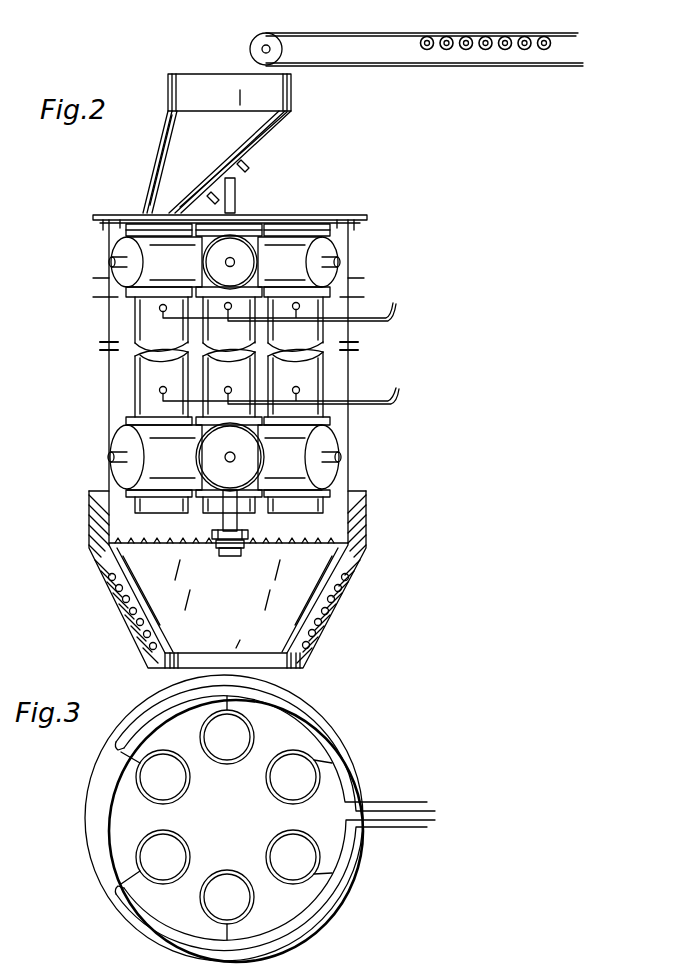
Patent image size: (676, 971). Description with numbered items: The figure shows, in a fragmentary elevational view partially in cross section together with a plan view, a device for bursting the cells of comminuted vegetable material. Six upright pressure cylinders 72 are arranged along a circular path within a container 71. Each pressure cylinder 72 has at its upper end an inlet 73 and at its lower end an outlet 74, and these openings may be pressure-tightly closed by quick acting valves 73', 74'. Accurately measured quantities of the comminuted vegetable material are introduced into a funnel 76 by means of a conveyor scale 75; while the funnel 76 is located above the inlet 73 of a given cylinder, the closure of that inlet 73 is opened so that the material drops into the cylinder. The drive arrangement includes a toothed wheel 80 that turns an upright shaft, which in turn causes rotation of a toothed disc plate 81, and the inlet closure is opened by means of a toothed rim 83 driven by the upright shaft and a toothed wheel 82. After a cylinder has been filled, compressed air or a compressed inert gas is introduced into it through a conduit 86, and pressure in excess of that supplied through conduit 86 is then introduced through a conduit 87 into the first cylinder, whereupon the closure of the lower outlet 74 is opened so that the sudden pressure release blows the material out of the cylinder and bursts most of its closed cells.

In FIG. 2, the container 71 is at (348, 369).
In FIG. 2, the pressure cylinder 72 is at (143, 378).
In FIG. 3, the pressure cylinder 72 is at (298, 762).
In FIG. 2, the inlet 73 is at (230, 199).
In FIG. 2, the quick acting valve 73' is at (249, 260).
In FIG. 2, the outlet 74 is at (229, 518).
In FIG. 2, the quick acting valve 74' is at (249, 457).
In FIG. 2, the conveyor scale 75 is at (396, 33).
In FIG. 2, the funnel 76 is at (284, 96).
In FIG. 2, the toothed wheel 80 is at (334, 515).
In FIG. 2, the toothed disc plate 81 is at (313, 542).
In FIG. 2, the toothed wheel 82 is at (122, 607).
In FIG. 2, the toothed rim 83 is at (347, 594).
In FIG. 2, the conduit 86 is at (292, 385).
In FIG. 3, the conduit 86 is at (405, 801).
In FIG. 2, the conduit 87 is at (289, 301).
In FIG. 3, the conduit 87 is at (400, 830).